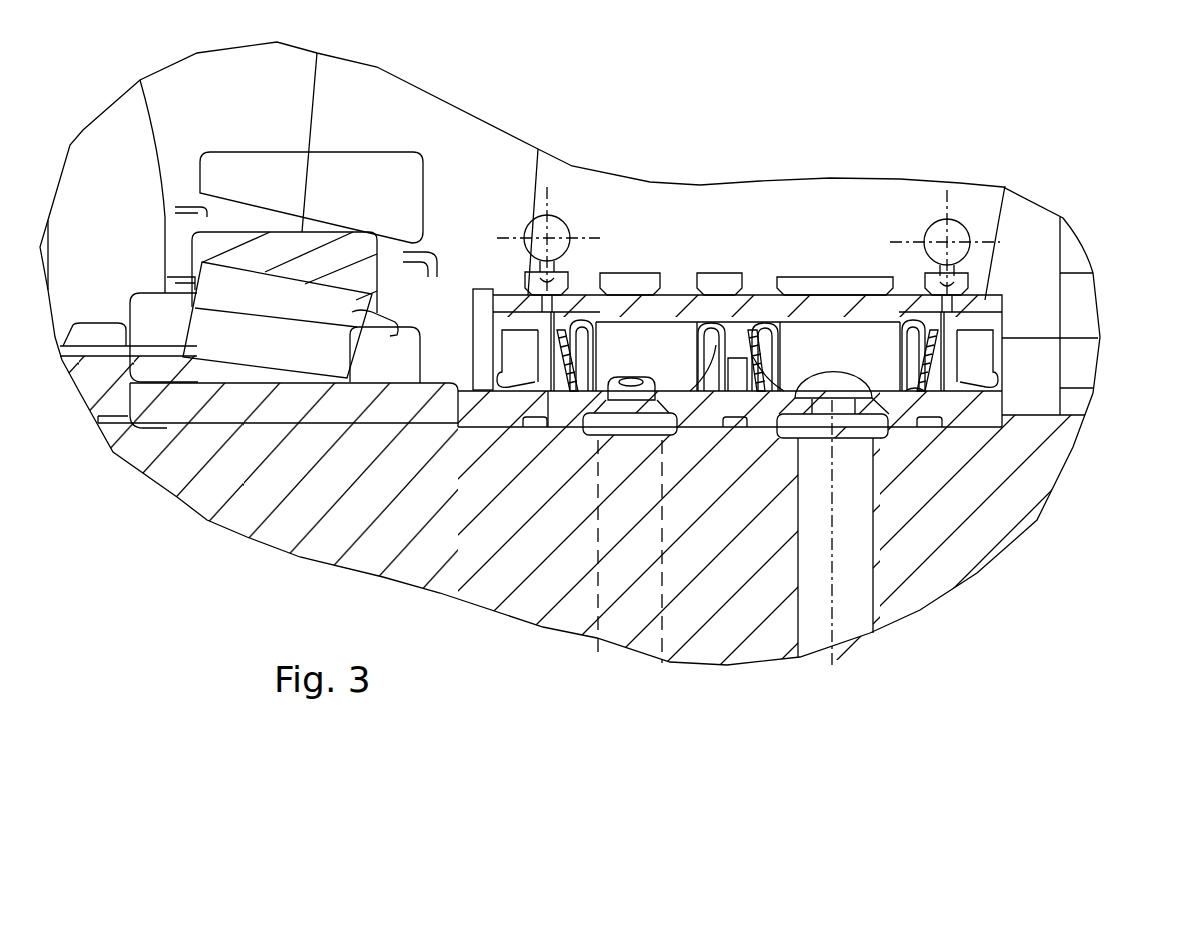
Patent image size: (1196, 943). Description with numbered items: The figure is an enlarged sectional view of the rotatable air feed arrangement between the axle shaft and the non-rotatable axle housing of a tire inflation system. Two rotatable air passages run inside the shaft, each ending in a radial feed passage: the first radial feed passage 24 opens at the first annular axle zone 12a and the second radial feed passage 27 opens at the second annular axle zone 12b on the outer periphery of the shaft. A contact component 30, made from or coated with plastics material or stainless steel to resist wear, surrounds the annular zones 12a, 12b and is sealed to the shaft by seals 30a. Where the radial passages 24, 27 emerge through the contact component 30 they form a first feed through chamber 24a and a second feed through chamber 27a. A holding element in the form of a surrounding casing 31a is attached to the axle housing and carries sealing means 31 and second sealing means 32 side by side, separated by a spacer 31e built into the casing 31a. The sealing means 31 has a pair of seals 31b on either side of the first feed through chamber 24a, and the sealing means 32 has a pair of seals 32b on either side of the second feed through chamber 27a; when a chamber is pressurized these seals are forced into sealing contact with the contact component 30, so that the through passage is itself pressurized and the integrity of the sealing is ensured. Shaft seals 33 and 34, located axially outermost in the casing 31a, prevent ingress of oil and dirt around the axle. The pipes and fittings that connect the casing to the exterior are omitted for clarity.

The first annular axle zone 12a is at (872, 433).
The second annular axle zone 12b is at (592, 425).
The first radial feed passage 24 is at (847, 610).
The first feed through chamber 24a is at (839, 368).
The second radial feed passage 27 is at (632, 610).
The second feed through chamber 27a is at (645, 367).
The contact component 30 is at (502, 422).
The seals 30a is at (535, 425).
The sealing means 31 is at (900, 385).
The surrounding casing 31a is at (548, 420).
The seals 31b is at (897, 380).
The spacer 31e is at (752, 330).
The second sealing means 32 is at (715, 310).
The seals 32b is at (679, 308).
The shaft seal 33 is at (1000, 323).
The shaft seal 34 is at (504, 388).